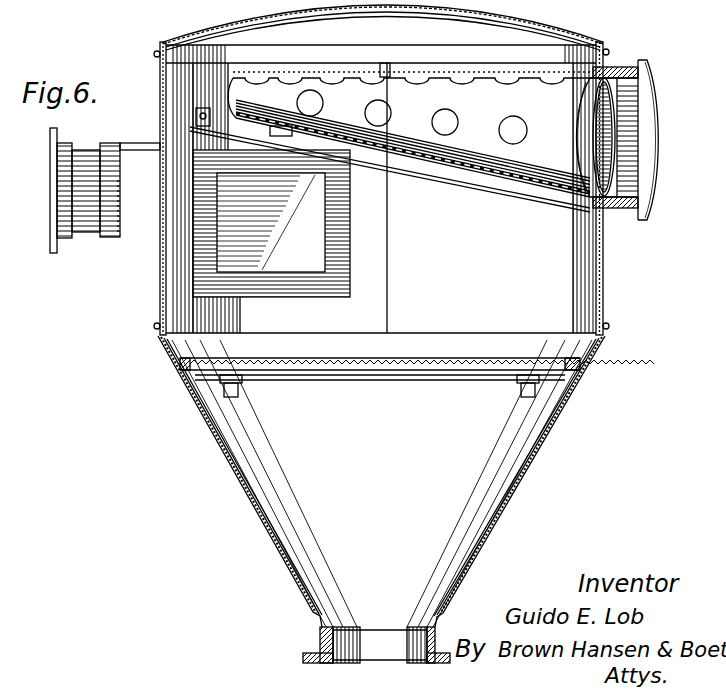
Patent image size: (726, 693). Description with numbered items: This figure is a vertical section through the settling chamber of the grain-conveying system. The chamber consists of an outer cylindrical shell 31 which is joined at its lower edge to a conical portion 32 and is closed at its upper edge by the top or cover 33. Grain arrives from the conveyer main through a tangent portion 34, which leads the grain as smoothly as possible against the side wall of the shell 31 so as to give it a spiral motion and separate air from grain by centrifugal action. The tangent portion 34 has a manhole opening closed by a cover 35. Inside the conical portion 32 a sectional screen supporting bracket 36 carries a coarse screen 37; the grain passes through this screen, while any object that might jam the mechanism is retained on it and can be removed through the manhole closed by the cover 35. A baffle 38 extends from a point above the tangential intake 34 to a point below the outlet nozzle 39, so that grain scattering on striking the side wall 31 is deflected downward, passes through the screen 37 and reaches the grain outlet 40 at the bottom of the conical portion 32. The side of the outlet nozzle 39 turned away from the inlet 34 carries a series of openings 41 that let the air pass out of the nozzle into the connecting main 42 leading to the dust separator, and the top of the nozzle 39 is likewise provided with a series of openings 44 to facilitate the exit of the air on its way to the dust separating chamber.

The outer cylindrical shell 31 is at (603, 273).
The conical portion 32 is at (515, 487).
The top or cover 33 is at (243, 22).
The tangent portion 34 is at (190, 293).
The manhole cover 35 is at (310, 225).
The sectional screen supporting bracket 36 is at (340, 373).
The coarse screen 37 is at (410, 360).
The baffle 38 is at (365, 150).
The outlet nozzle 39 is at (540, 155).
The grain outlet 40 is at (353, 648).
The openings 41 is at (510, 127).
The connecting main 42 is at (640, 152).
The openings 44 is at (457, 79).